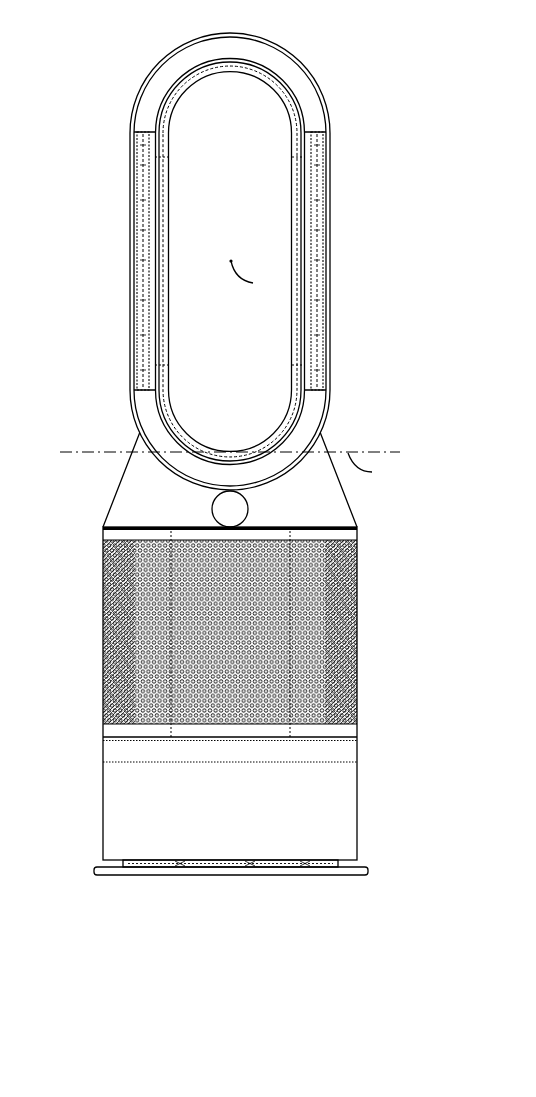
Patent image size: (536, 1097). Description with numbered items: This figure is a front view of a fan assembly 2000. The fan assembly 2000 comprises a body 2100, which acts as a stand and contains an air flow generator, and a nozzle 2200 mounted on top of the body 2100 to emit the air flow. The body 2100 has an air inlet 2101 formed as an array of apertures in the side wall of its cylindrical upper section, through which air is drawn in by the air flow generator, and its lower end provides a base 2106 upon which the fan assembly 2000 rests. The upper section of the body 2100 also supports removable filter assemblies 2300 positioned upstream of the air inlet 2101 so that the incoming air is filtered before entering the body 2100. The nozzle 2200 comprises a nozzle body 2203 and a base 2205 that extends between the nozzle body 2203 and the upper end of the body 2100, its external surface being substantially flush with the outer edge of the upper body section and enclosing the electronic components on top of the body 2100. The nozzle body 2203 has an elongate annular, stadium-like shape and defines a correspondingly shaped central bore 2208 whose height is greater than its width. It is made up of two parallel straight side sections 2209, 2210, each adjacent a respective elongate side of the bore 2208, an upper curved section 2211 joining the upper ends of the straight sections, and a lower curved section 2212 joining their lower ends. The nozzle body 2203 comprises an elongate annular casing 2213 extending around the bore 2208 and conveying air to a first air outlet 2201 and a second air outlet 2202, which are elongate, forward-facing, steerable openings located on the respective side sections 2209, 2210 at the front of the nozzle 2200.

The fan assembly 2000 is at (158, 40).
The body 2100 is at (98, 602).
The air inlet 2101 is at (358, 708).
The base 2106 is at (348, 874).
The nozzle 2200 is at (122, 337).
The first air outlet 2201 is at (150, 215).
The second air outlet 2202 is at (320, 246).
The nozzle body 2203 is at (333, 355).
The base 2205 is at (340, 502).
The bore 2208 is at (273, 332).
The straight side section 2209 is at (137, 172).
The straight side section 2210 is at (333, 185).
The upper curved section 2211 is at (296, 72).
The lower curved section 2212 is at (318, 408).
The annular casing 2213 is at (129, 375).
The filter assemblies 2300 is at (358, 620).